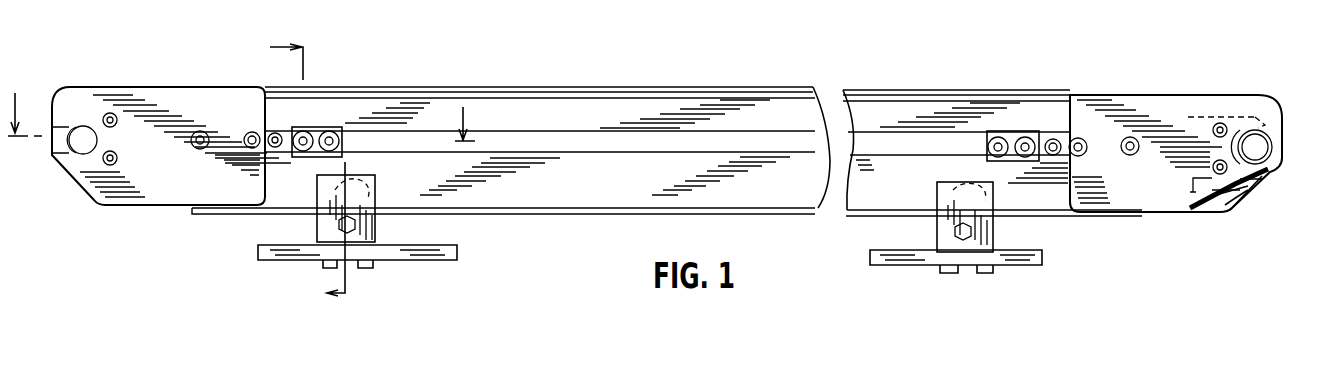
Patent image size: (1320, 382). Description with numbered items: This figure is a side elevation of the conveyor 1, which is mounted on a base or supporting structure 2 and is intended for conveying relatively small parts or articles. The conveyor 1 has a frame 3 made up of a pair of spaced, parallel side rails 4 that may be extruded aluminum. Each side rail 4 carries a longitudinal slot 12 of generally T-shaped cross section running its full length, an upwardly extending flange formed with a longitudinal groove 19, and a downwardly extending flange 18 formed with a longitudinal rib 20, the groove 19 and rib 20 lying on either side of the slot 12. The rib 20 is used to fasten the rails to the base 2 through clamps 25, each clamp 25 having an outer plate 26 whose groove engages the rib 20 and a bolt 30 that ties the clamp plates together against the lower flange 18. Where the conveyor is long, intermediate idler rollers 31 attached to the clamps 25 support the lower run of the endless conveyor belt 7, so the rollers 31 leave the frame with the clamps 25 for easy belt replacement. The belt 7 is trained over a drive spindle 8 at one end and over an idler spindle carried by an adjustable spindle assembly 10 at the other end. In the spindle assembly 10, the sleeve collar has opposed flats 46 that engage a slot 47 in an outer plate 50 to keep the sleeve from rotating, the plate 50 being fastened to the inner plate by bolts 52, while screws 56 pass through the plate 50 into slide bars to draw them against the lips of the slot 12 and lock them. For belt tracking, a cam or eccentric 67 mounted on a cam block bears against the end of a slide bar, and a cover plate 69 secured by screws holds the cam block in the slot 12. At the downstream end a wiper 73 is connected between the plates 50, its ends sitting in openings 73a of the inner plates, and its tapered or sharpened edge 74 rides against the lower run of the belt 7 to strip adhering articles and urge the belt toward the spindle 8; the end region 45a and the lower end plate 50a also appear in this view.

The conveyor 1 is at (893, 90).
The base or supporting structure 2 is at (432, 258).
The frame 3 is at (627, 217).
The side rails 4 is at (712, 187).
The endless conveyor belt 7 is at (1199, 116).
The drive spindle 8 is at (1283, 118).
The spindle assembly 10 is at (172, 207).
The longitudinal slot 12 is at (583, 143).
The downwardly extending flange 18 is at (803, 188).
The longitudinal groove 19 is at (606, 97).
The longitudinal rib or flange 20 is at (752, 214).
The clamps 25 is at (317, 218).
The outer plate 26 is at (374, 214).
The bolt 30 is at (349, 232).
The intermediate idler rollers 31 is at (355, 198).
The end block corner portion 45a is at (1210, 212).
The flats 46 is at (81, 126).
The slot 47 is at (53, 152).
The outer plate 50 is at (123, 192).
The end plate 50a is at (1167, 193).
The bolts 52 is at (112, 113).
The screws 56 is at (249, 132).
The cam or eccentric 67 is at (293, 130).
The cover plate 69 is at (341, 128).
The wiper 73 is at (1243, 196).
The opening 73a is at (1245, 205).
The tapered or sharpened edge 74 is at (1256, 192).